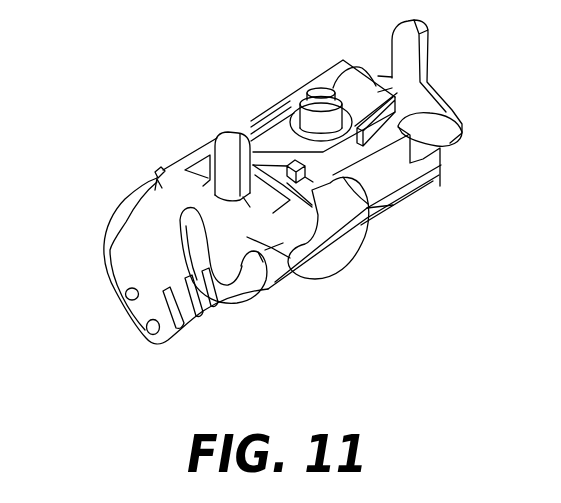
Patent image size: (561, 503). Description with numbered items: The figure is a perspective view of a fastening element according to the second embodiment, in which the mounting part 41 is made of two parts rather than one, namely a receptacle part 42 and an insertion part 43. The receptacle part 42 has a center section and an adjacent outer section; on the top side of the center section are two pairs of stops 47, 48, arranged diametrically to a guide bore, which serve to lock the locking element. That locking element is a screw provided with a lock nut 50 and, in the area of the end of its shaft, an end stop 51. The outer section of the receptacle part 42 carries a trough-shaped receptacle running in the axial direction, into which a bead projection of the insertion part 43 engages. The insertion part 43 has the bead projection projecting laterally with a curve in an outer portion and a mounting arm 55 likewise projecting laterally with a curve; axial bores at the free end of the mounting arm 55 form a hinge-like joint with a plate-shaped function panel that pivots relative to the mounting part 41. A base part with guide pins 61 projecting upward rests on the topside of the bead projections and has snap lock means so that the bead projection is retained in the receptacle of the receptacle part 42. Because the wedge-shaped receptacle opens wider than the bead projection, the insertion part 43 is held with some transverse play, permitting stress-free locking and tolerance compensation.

The mounting part 41 is at (401, 249).
The receptacle part 42 is at (260, 294).
The insertion part 43 is at (152, 176).
The stops 47 is at (452, 144).
The stops 48 is at (393, 205).
The lock nut 50 is at (370, 73).
The end stop 51 is at (286, 102).
The mounting arm 55 is at (122, 242).
The guide pins 61 is at (425, 57).